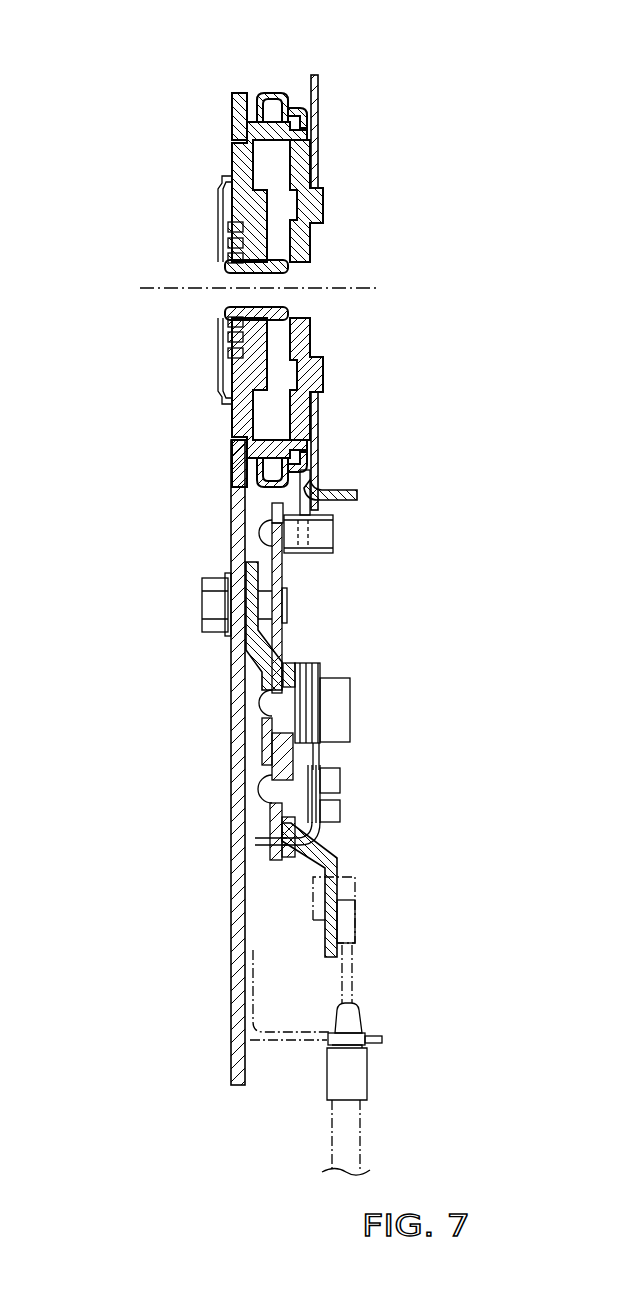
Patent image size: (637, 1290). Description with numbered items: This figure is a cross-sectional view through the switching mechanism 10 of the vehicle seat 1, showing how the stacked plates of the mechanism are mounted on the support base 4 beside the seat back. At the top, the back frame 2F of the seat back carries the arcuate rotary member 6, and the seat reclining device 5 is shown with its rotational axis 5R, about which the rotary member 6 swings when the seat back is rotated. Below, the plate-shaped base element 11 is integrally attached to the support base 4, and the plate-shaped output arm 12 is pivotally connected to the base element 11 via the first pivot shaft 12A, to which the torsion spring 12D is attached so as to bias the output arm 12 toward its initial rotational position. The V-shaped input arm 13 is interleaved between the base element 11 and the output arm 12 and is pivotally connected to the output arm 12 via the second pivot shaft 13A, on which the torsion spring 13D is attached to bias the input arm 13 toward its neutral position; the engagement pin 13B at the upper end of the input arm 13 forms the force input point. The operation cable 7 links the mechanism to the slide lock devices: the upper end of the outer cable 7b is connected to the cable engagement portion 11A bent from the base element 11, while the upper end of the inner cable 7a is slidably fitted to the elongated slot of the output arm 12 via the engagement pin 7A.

The vehicle seat 1 is at (118, 129).
The seat reclining device 5 is at (261, 91).
The back frame 2F is at (318, 99).
The rotational axis 5R is at (185, 287).
The support base 4 is at (240, 490).
The rotary member 6 is at (305, 490).
The switching mechanism 10 is at (386, 505).
The input arm 13 is at (279, 571).
The engagement pin 13B is at (323, 530).
The base element 11 is at (250, 578).
The torsion spring 12D is at (318, 664).
The first pivot shaft 12A is at (335, 700).
The second pivot shaft 13A is at (312, 763).
The torsion spring 13D is at (340, 779).
The output arm 12 is at (338, 862).
The engagement pin 7A is at (352, 900).
The inner cable 7a is at (356, 986).
The outer cable 7b is at (377, 1110).
The operation cable 7 is at (396, 1060).
The cable engagement portion 11A is at (287, 1043).